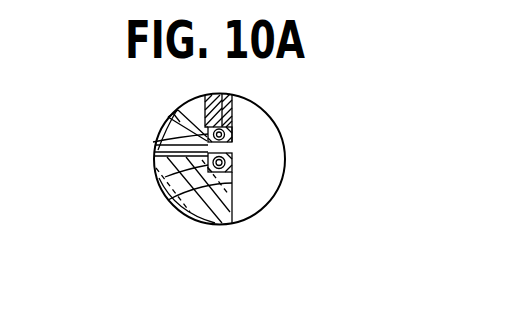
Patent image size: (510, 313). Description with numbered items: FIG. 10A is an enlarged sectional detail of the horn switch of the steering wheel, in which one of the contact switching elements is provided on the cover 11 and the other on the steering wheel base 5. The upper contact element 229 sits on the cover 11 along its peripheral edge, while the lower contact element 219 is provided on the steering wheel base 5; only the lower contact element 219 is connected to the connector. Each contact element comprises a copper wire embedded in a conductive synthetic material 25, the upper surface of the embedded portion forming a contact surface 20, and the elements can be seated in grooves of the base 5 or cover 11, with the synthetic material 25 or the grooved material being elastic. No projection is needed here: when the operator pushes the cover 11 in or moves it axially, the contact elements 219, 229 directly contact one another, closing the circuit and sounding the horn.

The cover 11 is at (232, 95).
The upper contact element 229 is at (232, 130).
The lower contact element 219 is at (225, 160).
The contact surface 20 is at (155, 156).
The conductive synthetic material 25 is at (158, 133).
The steering wheel base 5 is at (232, 183).